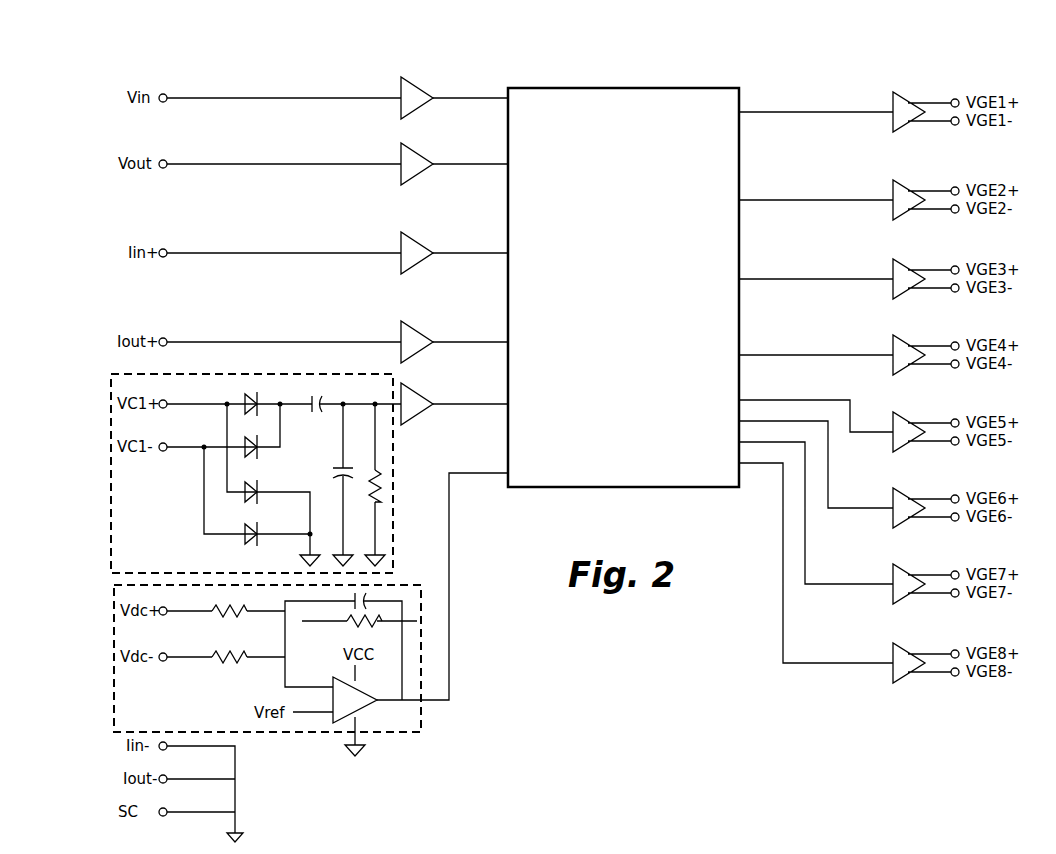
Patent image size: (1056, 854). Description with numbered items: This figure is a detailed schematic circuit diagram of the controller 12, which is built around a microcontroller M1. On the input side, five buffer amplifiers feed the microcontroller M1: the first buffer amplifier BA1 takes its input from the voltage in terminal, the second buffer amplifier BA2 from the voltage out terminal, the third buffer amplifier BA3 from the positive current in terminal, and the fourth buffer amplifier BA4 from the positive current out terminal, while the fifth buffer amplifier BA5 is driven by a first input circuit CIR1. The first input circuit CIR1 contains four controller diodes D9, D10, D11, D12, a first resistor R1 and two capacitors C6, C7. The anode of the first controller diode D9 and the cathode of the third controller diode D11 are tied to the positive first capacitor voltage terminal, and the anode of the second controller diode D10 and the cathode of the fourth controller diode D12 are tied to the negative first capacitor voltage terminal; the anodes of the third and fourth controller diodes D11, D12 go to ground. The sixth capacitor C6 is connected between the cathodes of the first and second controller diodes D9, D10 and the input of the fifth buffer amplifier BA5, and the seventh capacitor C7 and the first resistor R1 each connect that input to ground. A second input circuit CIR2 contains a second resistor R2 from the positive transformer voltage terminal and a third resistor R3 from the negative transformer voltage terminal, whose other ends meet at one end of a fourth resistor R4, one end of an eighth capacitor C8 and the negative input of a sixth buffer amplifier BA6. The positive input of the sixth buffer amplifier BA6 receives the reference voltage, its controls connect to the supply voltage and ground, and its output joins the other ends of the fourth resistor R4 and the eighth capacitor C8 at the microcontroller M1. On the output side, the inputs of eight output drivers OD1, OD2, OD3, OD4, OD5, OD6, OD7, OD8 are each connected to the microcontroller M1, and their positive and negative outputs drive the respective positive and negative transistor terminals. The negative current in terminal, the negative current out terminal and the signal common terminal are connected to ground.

The controller 12 is at (636, 259).
The microcontroller M1 is at (738, 43).
The first buffer amplifier BA1 is at (429, 92).
The second buffer amplifier BA2 is at (429, 158).
The third buffer amplifier BA3 is at (429, 247).
The fourth buffer amplifier BA4 is at (429, 336).
The fifth buffer amplifier BA5 is at (429, 398).
The sixth buffer amplifier BA6 is at (362, 697).
The first output driver OD1 is at (905, 111).
The second output driver OD2 is at (905, 199).
The third output driver OD3 is at (905, 278).
The fourth output driver OD4 is at (905, 354).
The fifth output driver OD5 is at (907, 431).
The sixth output driver OD6 is at (905, 507).
The seventh output driver OD7 is at (905, 583).
The eighth output driver OD8 is at (905, 662).
The first input circuit CIR1 is at (197, 372).
The second input circuit CIR2 is at (384, 729).
The first controller diode D9 is at (263, 411).
The second controller diode D10 is at (269, 451).
The third controller diode D11 is at (269, 496).
The fourth controller diode D12 is at (269, 539).
The sixth capacitor C6 is at (328, 397).
The seventh capacitor C7 is at (334, 479).
The eighth capacitor C8 is at (349, 604).
The first resistor R1 is at (393, 479).
The second resistor R2 is at (229, 602).
The third resistor R3 is at (229, 648).
The fourth resistor R4 is at (359, 629).